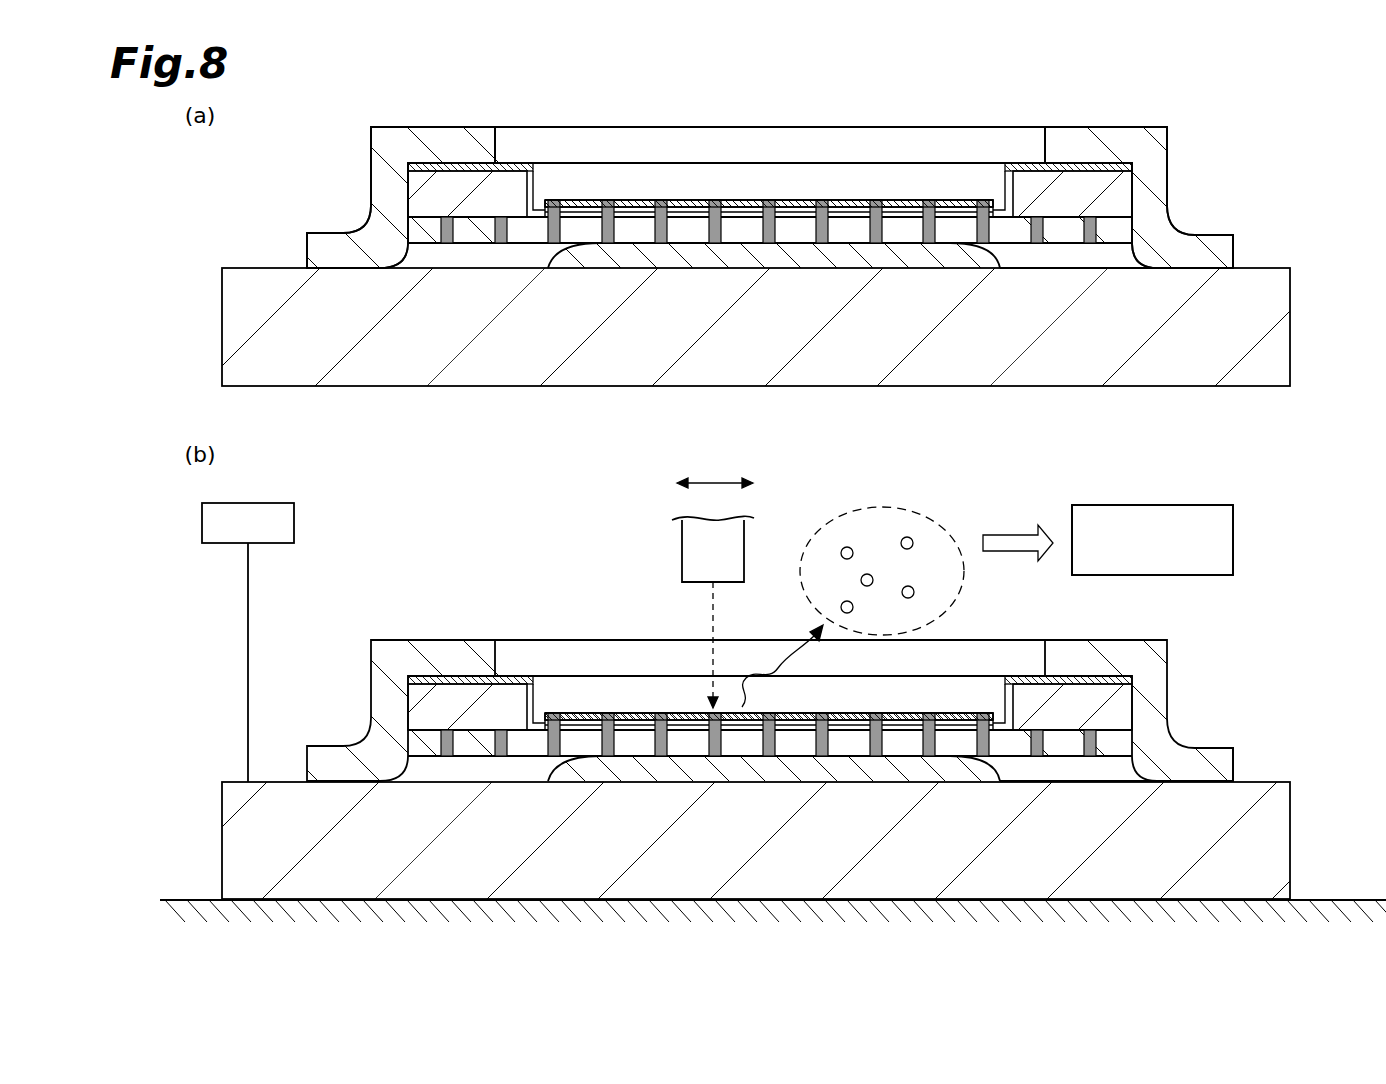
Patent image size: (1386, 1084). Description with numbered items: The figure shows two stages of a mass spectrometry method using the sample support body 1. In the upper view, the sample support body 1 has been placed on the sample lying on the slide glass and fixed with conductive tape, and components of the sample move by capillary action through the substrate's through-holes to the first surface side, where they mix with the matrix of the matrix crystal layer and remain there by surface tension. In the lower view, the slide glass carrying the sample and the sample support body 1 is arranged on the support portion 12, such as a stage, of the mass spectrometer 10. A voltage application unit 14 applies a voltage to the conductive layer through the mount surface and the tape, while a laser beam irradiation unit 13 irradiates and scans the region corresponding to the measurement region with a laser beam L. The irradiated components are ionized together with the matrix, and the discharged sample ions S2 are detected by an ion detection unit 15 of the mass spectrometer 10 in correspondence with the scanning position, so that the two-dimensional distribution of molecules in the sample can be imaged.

The sample support body 1 is at (1097, 156).
The mass spectrometer 10 is at (1224, 500).
The support portion 12 is at (200, 900).
The laser beam irradiation unit 13 is at (682, 553).
The voltage application unit 14 is at (296, 520).
The ion detection unit 15 is at (1233, 540).
The sample ions S2 is at (907, 537).
The laser beam L is at (710, 612).